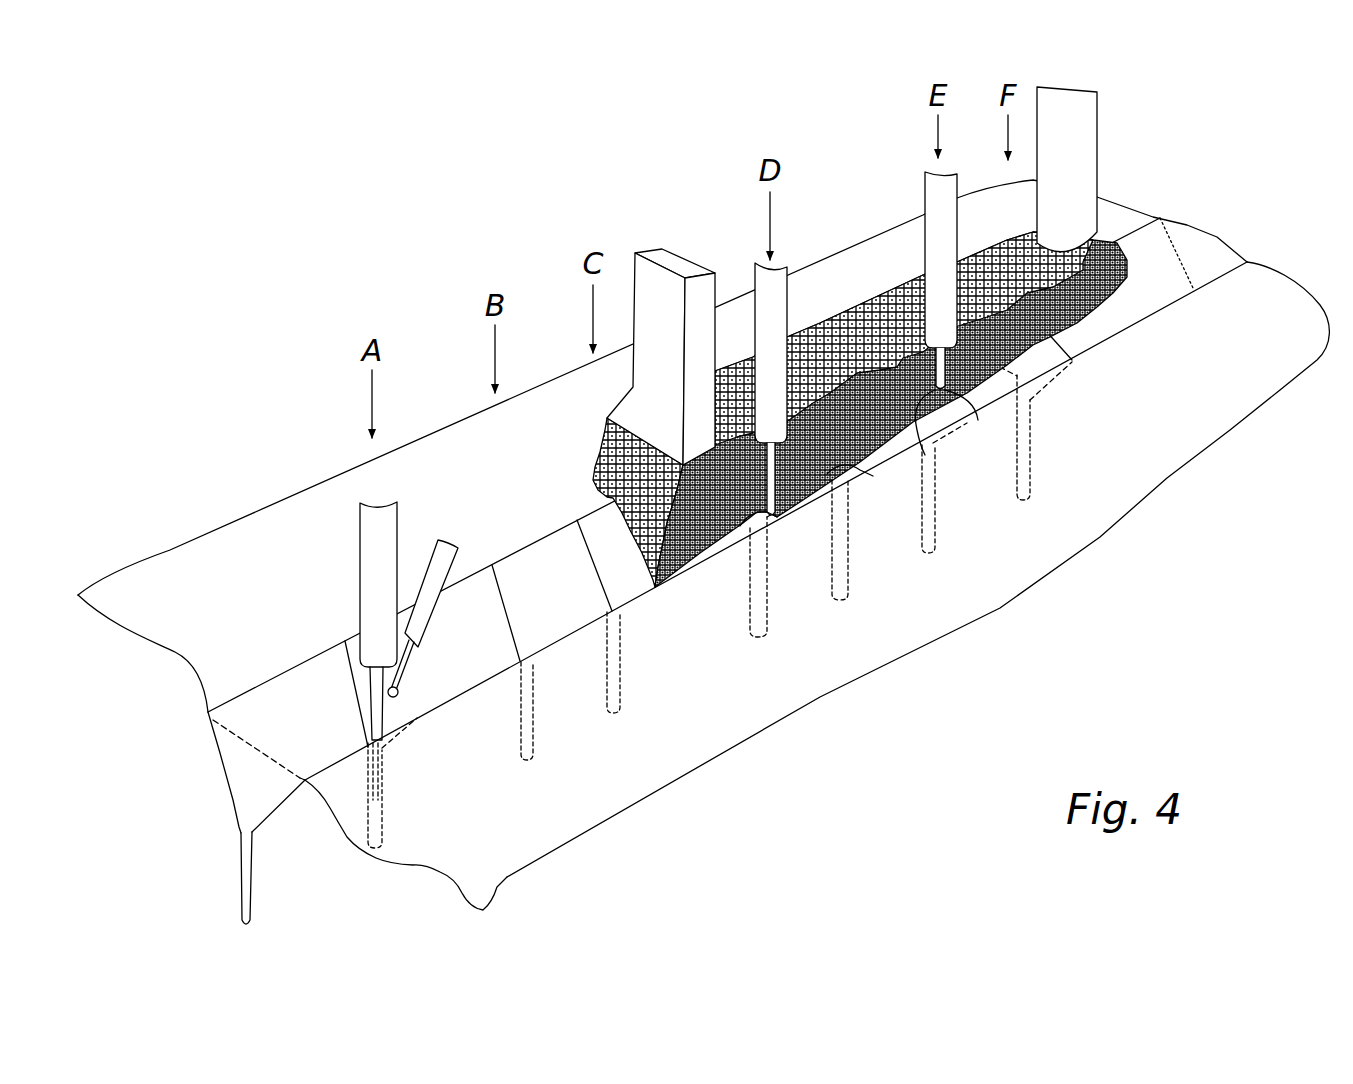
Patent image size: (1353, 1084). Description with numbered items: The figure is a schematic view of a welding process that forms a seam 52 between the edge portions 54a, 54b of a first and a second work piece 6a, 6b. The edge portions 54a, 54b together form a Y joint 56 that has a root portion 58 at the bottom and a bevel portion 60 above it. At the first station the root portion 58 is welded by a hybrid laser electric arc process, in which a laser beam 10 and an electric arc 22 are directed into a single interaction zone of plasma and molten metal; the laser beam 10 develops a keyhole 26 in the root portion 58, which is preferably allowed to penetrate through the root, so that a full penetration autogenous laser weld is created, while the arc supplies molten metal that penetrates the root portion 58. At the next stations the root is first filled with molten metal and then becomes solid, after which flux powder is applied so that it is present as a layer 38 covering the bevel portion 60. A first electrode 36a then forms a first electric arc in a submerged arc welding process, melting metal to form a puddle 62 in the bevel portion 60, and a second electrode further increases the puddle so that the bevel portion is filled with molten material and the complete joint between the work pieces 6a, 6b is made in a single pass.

The first work piece 6a is at (187, 847).
The second work piece 6b is at (332, 887).
The laser beam 10 is at (345, 641).
The electric arc 22 is at (400, 688).
The keyhole 26 is at (380, 787).
The first electrode 36a is at (833, 478).
The flux powder layer 38 is at (612, 447).
The seam 52 is at (1160, 247).
The edge portion of first work piece 54a is at (222, 760).
The edge portion of second work piece 54b is at (283, 797).
The Y joint 56 is at (1003, 472).
The root portion 58 is at (250, 890).
The bevel portion 60 is at (280, 797).
The puddle 62 is at (778, 530).